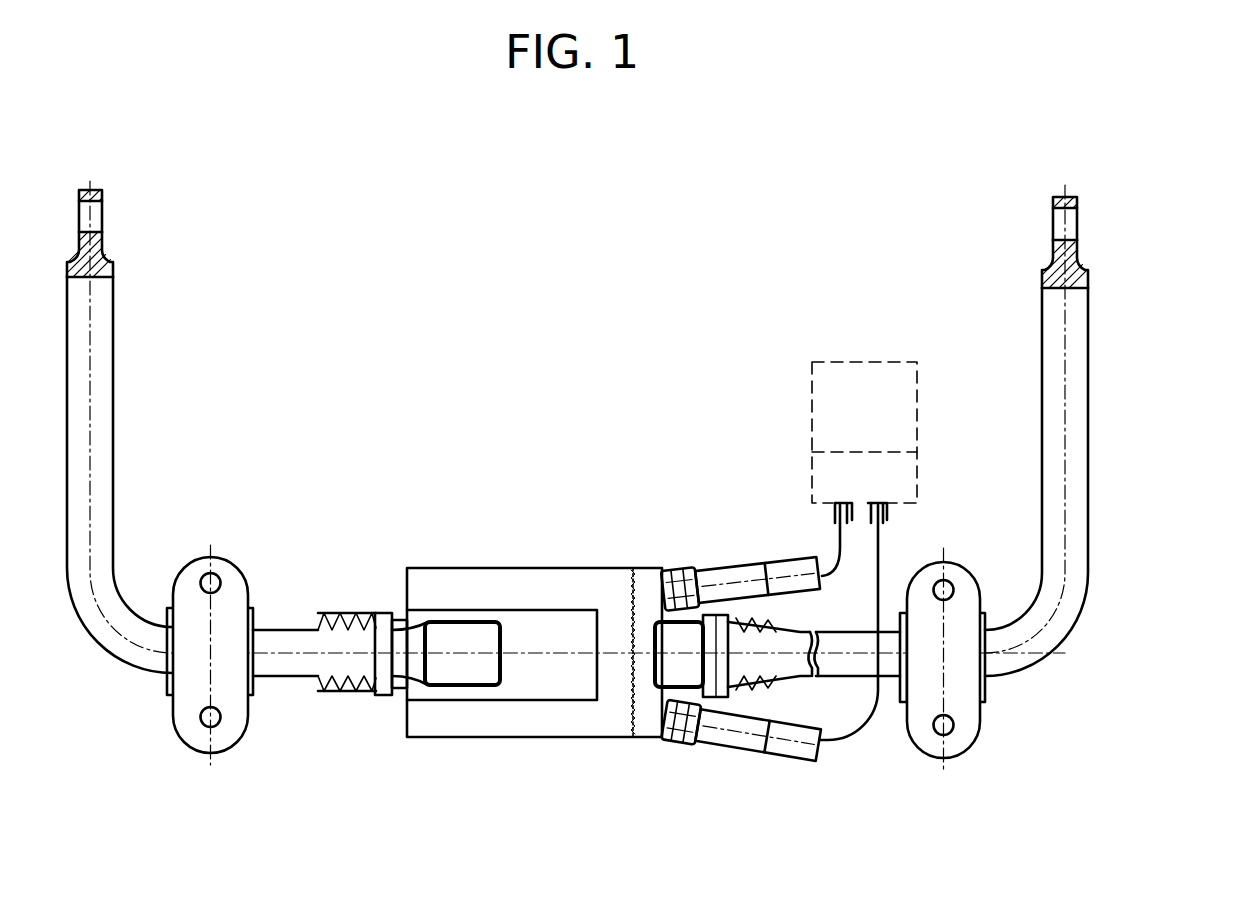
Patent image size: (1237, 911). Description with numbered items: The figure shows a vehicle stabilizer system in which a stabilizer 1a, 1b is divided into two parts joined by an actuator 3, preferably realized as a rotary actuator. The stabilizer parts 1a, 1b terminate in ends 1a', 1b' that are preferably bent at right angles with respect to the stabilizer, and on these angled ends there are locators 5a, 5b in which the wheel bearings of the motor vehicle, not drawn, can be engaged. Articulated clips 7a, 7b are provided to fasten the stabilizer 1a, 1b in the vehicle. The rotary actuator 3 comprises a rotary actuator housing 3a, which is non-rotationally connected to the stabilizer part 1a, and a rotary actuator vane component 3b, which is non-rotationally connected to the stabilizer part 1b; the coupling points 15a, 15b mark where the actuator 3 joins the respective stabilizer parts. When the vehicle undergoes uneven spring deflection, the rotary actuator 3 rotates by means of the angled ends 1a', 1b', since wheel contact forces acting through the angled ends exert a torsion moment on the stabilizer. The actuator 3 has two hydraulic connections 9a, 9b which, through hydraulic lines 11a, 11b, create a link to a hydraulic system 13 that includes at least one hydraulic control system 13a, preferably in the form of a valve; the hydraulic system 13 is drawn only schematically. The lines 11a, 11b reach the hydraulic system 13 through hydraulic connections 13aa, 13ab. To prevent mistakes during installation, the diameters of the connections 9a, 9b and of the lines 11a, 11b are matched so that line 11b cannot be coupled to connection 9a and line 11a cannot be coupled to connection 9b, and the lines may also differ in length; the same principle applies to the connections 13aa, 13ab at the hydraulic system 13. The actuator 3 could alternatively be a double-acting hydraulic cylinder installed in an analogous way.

The stabilizer part 1a is at (828, 719).
The end of the stabilizer 1a' is at (1102, 482).
The stabilizer part 1b is at (330, 713).
The end of the stabilizer 1b' is at (136, 475).
The actuator 3 is at (428, 792).
The rotary actuator housing 3a is at (487, 568).
The rotary actuator vane component 3b is at (551, 700).
The locator 5a is at (1070, 220).
The locator 5b is at (96, 215).
The articulated clip 7a is at (963, 728).
The articulated clip 7b is at (180, 718).
The hydraulic connection 9a is at (683, 740).
The hydraulic connection 9b is at (683, 578).
The hydraulic line 11a is at (748, 738).
The hydraulic line 11b is at (745, 573).
The hydraulic system 13 is at (748, 417).
The hydraulic control system 13a is at (898, 476).
The hydraulic connection 13aa is at (886, 515).
The hydraulic connection 13ab is at (835, 513).
The coupling point 15a is at (684, 738).
The coupling point 15b is at (450, 635).